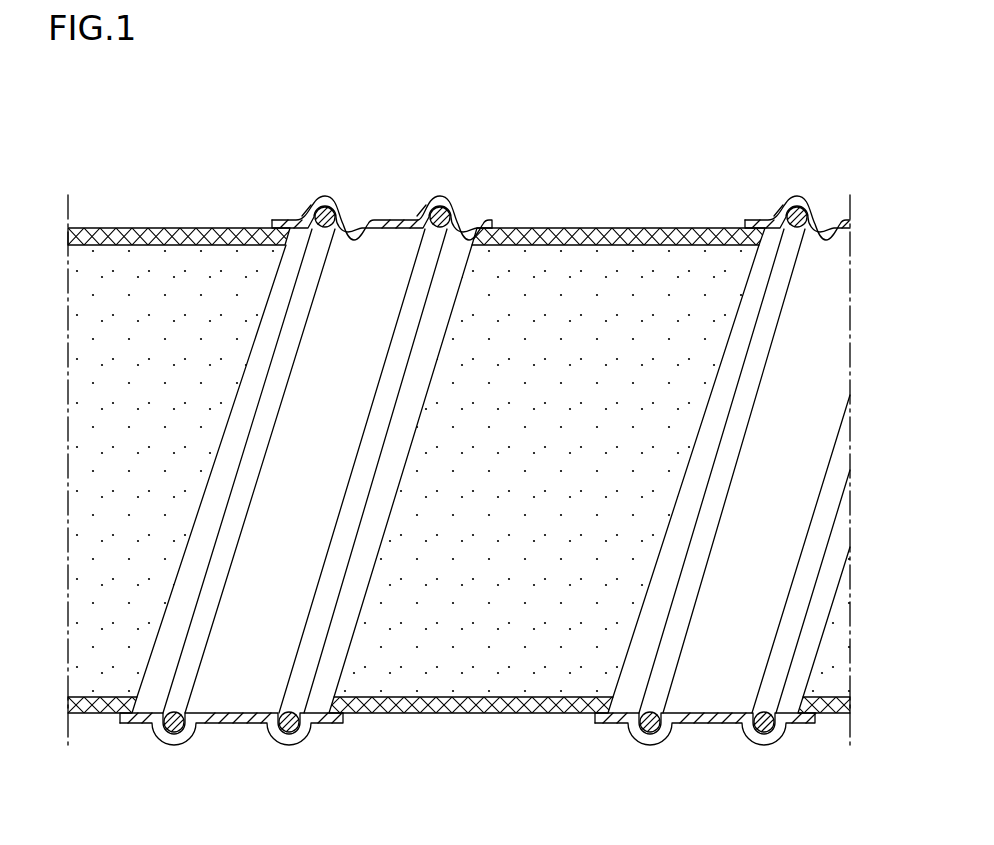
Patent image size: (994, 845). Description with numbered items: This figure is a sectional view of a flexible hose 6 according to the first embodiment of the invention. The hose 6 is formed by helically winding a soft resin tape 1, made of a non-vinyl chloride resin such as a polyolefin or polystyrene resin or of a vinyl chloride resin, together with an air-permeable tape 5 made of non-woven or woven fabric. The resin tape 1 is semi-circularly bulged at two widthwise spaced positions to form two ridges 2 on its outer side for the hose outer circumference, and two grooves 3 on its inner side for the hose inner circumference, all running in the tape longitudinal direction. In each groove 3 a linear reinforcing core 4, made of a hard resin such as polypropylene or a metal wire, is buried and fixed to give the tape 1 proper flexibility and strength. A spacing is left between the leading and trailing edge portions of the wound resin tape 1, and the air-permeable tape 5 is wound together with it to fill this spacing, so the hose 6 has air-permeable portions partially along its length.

The soft resin tape 1 is at (402, 210).
The ridge 2 is at (333, 203).
The groove 3 is at (372, 220).
The linear reinforcing core 4 is at (175, 734).
The air-permeable tape 5 is at (165, 430).
The flexible hose 6 is at (612, 163).